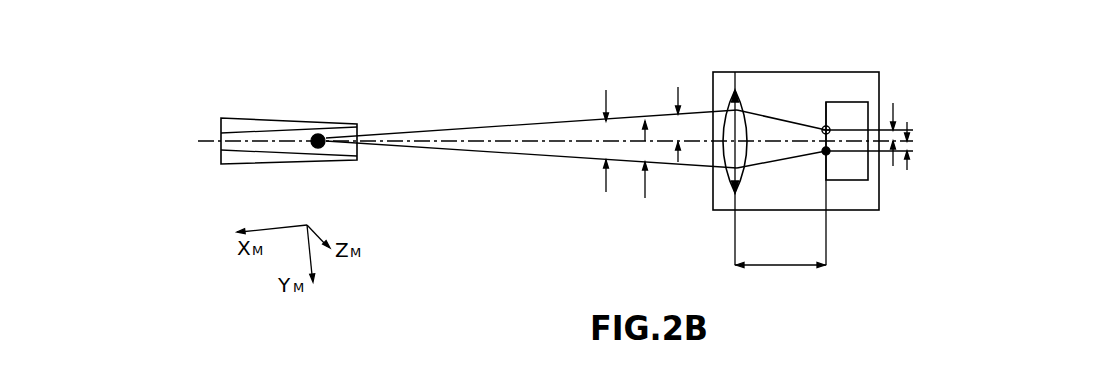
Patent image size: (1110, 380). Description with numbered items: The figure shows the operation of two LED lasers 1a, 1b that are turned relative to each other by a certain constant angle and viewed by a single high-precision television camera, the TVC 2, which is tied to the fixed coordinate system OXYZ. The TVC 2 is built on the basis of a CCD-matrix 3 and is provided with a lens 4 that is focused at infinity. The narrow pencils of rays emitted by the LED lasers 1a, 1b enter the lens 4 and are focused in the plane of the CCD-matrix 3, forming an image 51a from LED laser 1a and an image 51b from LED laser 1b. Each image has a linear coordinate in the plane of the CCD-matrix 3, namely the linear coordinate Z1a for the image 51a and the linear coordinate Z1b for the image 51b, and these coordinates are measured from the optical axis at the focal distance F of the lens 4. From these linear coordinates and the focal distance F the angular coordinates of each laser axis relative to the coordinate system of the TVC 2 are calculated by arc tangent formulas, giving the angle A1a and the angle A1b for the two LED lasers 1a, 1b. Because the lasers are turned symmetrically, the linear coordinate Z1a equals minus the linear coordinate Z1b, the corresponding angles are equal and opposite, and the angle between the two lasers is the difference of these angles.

The LED laser 1a is at (347, 121).
The LED laser 1b is at (347, 163).
The high-precision TVC 2 is at (712, 190).
The CCD-matrix 3 is at (823, 126).
The lens 4 is at (730, 96).
The image formed from LED laser 1a 51a is at (822, 129).
The image formed from LED laser 1b 51b is at (825, 154).
The angle A1a is at (678, 132).
The angle A1b is at (646, 158).
The linear coordinate z1a Z1a is at (893, 104).
The linear coordinate z1b Z1b is at (907, 182).
The focal distance F is at (780, 266).